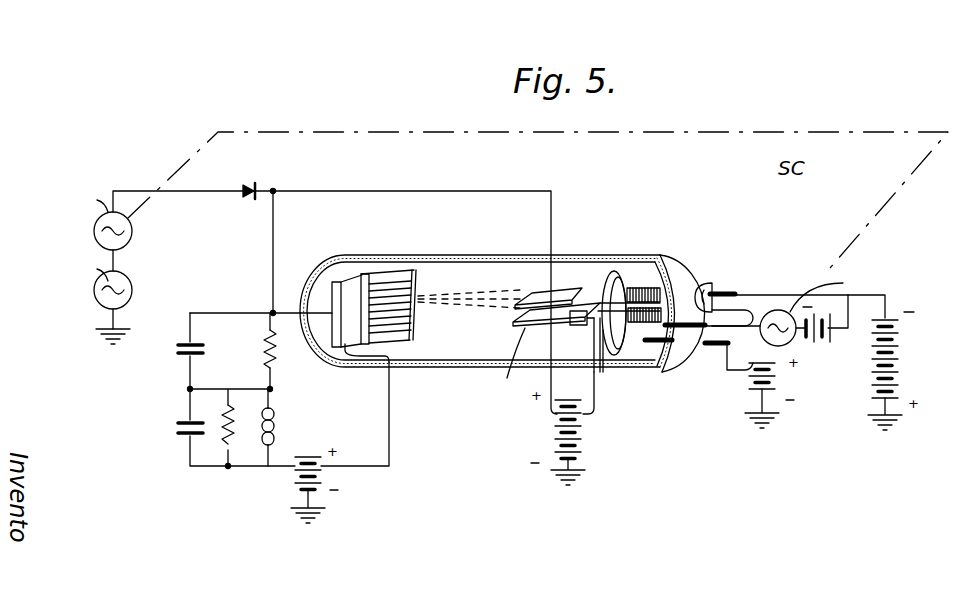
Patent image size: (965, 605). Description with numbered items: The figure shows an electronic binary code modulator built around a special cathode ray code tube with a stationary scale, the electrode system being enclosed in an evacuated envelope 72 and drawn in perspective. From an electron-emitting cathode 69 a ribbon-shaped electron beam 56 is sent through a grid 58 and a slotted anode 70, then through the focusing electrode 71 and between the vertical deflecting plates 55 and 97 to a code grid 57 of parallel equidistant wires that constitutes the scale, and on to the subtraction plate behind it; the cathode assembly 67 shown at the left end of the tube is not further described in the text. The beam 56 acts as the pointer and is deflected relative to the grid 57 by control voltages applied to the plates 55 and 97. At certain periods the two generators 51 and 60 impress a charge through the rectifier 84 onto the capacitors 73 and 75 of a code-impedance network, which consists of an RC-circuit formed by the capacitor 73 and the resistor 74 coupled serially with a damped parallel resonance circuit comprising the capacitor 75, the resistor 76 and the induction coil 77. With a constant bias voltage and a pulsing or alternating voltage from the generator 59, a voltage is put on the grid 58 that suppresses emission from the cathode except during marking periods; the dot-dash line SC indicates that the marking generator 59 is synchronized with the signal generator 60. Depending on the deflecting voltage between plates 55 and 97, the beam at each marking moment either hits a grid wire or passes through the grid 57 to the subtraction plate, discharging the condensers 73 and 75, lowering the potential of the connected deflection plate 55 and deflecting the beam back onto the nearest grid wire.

The pulse generator 51 is at (130, 282).
The deflection plate 55 is at (553, 278).
The ribbon-shaped electron beam 56 is at (433, 293).
The code grid 57 is at (394, 283).
The grid 58 is at (640, 284).
The marking generator 59 is at (778, 311).
The signal generator 60 is at (135, 224).
The cathode 67 is at (347, 342).
The electron-emitting cathode 69 is at (688, 272).
The slotted anode 70 is at (636, 345).
The focusing electrode 71 is at (600, 372).
The evacuated envelope 72 is at (425, 366).
The capacitor 73 is at (178, 351).
The resistor 74 is at (264, 352).
The capacitor 75 is at (176, 428).
The resistor 76 is at (221, 450).
The induction coil 77 is at (280, 424).
The rectifier 84 is at (256, 184).
The deflection plate 97 is at (507, 378).